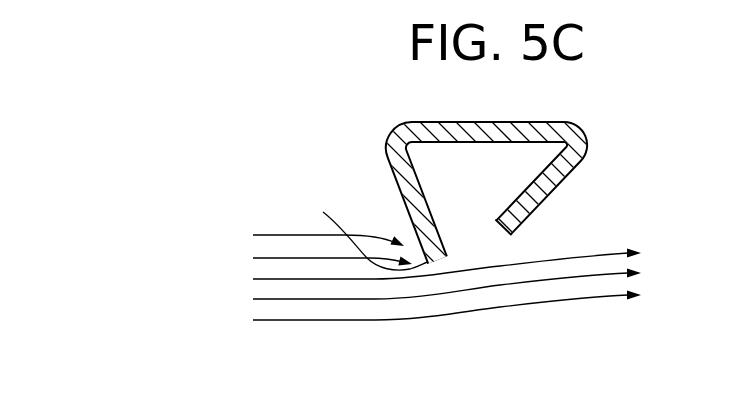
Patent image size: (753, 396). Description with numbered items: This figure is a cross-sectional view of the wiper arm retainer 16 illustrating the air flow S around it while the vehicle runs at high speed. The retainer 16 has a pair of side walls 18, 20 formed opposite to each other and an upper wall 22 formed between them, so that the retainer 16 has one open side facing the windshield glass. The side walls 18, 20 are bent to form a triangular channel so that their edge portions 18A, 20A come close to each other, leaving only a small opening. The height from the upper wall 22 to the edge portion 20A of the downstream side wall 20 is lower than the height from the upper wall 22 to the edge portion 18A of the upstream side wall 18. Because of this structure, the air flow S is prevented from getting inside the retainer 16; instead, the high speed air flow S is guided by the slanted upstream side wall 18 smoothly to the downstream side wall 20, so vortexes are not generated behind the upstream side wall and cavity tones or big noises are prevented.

The retainer 16 is at (601, 143).
The upper wall 22 is at (392, 130).
The side wall 18 is at (393, 173).
The edge portion 18A is at (359, 227).
The side wall 20 is at (564, 181).
The edge portion 20A is at (507, 240).
The air flow S is at (289, 278).